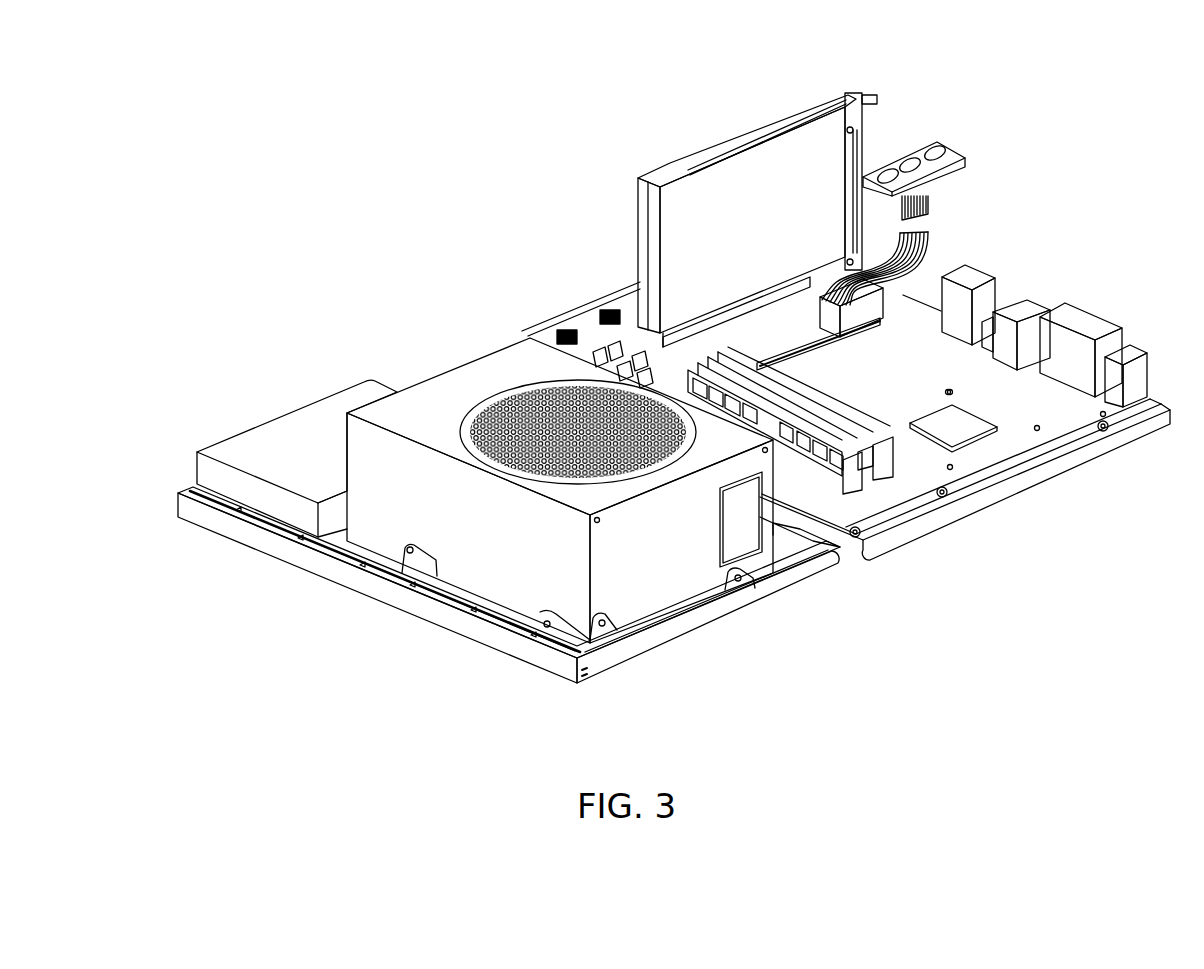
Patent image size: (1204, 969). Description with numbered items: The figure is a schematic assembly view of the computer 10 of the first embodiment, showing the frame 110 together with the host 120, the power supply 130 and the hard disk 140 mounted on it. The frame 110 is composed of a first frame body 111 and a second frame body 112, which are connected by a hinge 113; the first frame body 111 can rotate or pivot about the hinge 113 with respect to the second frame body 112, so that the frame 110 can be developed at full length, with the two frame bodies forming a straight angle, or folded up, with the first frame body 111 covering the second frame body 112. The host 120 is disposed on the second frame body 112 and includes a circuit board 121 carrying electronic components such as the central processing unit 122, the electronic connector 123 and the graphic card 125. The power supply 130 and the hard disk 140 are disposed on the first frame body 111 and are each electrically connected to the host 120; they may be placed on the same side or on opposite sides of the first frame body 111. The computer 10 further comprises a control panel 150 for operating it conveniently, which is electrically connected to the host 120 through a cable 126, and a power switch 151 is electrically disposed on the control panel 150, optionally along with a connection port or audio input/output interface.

The computer 10 is at (150, 71).
The frame 110 is at (367, 612).
The first frame body 111 is at (636, 648).
The second frame body 112 is at (960, 512).
The hinge 113 is at (777, 527).
The host 120 is at (684, 139).
The circuit board 121 is at (1080, 422).
The central processing unit 122 is at (960, 422).
The electronic connector 123 is at (1097, 325).
The graphic card 125 is at (808, 112).
The cable 126 is at (930, 213).
The power supply 130 is at (465, 373).
The hard disk 140 is at (242, 448).
The control panel 150 is at (962, 152).
The power switch 151 is at (910, 160).